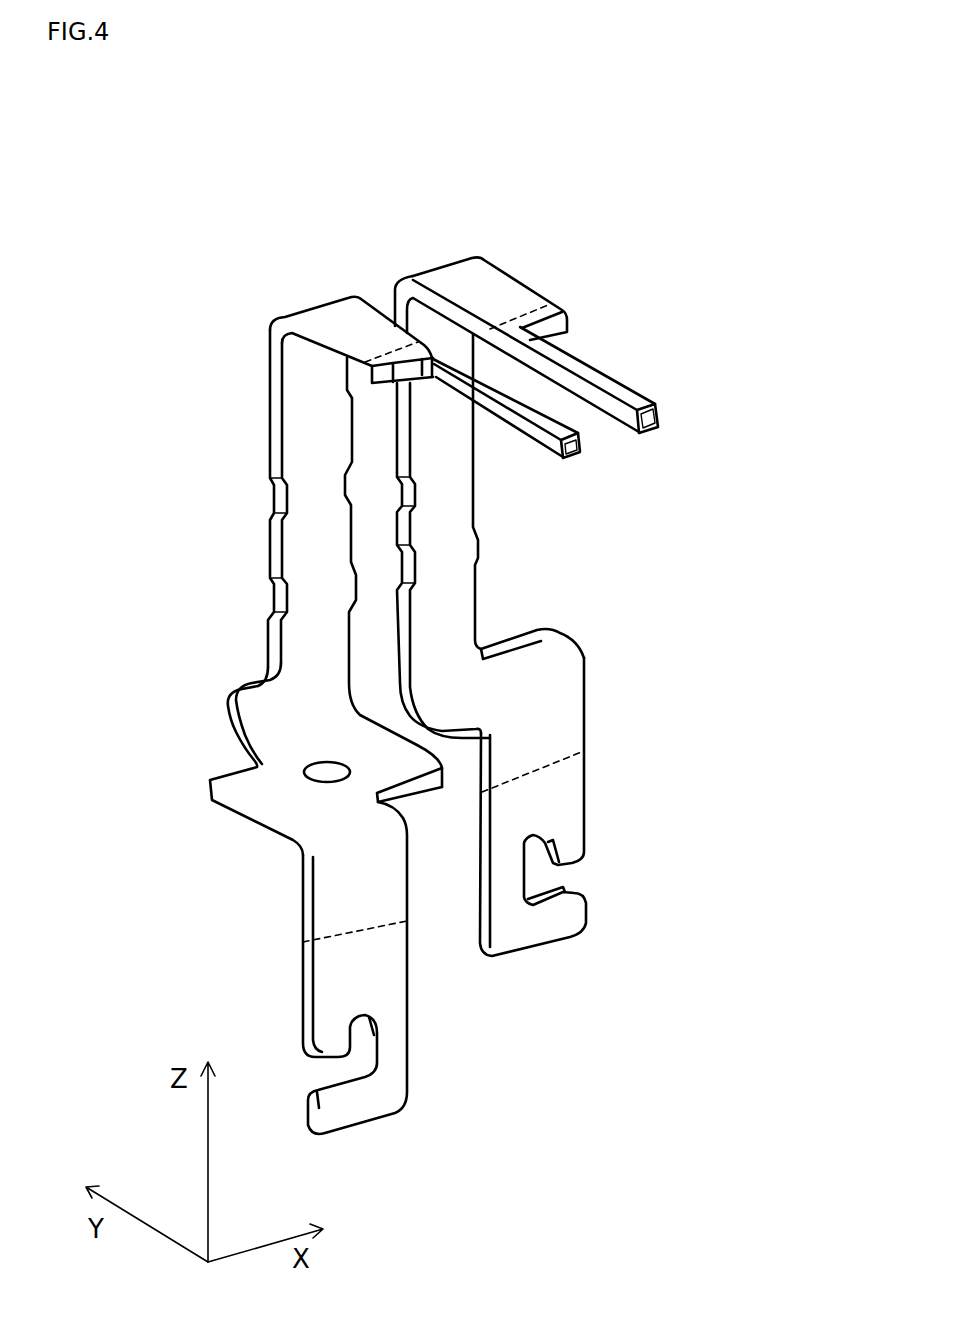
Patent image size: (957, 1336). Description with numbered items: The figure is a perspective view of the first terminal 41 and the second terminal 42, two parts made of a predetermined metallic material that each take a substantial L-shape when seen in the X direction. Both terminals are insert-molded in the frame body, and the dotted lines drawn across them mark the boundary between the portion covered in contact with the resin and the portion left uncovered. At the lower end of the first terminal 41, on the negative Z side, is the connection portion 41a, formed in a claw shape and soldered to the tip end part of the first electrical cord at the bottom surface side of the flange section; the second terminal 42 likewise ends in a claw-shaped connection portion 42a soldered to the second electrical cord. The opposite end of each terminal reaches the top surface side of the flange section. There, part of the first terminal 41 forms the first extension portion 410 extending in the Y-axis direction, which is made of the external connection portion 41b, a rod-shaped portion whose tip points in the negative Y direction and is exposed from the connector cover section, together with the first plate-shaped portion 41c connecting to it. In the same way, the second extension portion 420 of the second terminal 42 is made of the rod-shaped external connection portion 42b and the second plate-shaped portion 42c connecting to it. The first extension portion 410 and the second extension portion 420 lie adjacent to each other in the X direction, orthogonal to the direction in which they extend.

The first terminal 41 is at (226, 666).
The connection portion 41a is at (390, 1078).
The external connection portion 41b is at (535, 431).
The first plate-shaped portion 41c is at (327, 323).
The first extension portion 410 is at (187, 212).
The second terminal 42 is at (612, 641).
The connection portion 42a is at (565, 917).
The external connection portion 42b is at (620, 375).
The second plate-shaped portion 42c is at (490, 278).
The second extension portion 420 is at (745, 188).